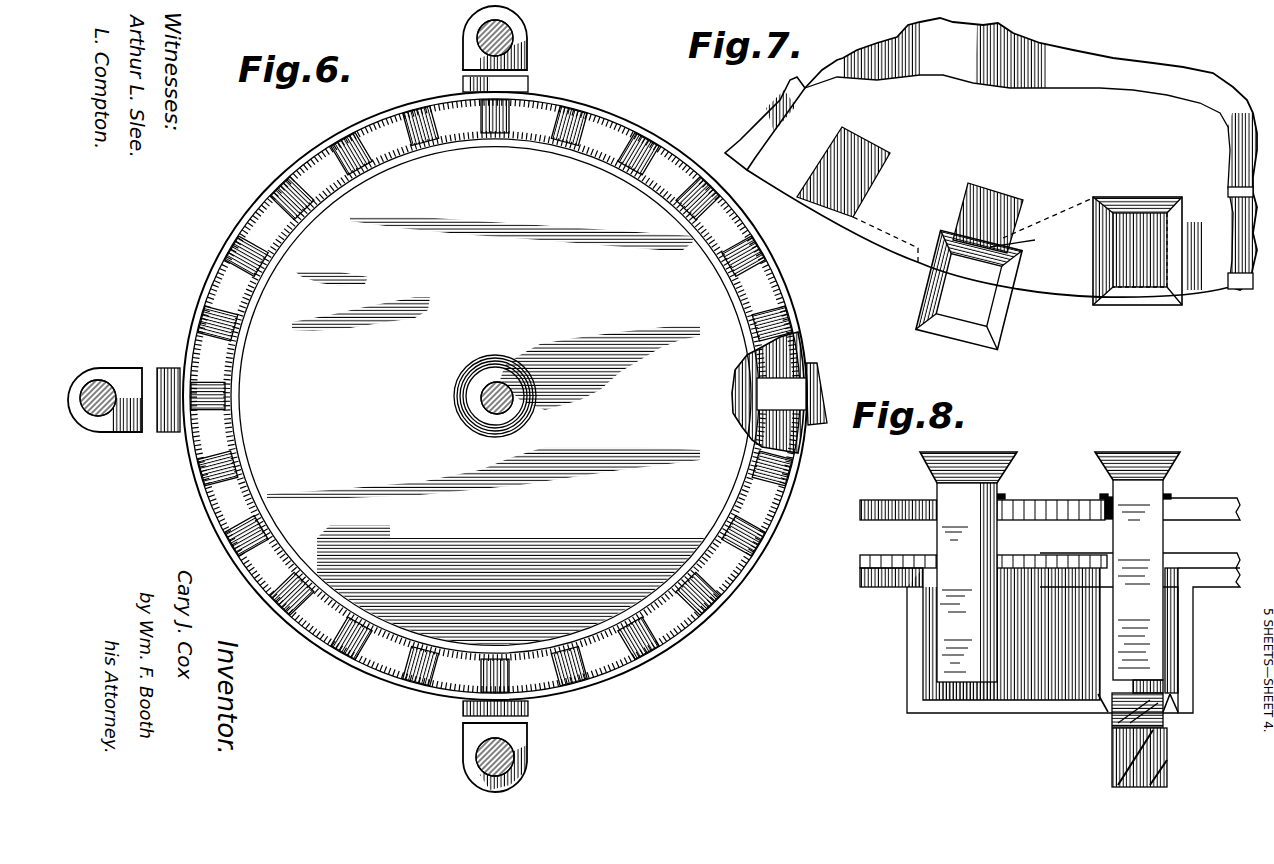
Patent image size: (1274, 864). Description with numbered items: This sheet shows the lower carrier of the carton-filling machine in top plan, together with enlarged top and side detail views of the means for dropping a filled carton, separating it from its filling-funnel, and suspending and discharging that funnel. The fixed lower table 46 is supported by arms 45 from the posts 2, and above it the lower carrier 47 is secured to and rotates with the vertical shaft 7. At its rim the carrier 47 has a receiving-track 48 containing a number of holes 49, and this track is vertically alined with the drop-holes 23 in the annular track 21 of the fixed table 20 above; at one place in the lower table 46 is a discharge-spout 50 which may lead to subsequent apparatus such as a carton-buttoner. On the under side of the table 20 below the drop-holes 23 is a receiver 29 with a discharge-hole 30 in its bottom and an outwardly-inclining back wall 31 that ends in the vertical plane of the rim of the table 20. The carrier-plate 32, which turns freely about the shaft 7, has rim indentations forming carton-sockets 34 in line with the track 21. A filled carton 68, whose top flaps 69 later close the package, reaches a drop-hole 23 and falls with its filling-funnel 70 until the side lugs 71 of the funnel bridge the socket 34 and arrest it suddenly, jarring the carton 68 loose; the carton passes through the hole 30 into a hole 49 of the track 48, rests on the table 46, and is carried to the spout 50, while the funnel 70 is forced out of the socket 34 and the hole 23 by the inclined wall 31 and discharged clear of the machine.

In FIG. 6, the posts 2 is at (522, 38).
In FIG. 6, the vertical shaft 7 is at (493, 384).
In FIG. 7, the fixed table 20 is at (1002, 157).
In FIG. 8, the fixed table 20 is at (1037, 560).
In FIG. 7, the annular track 21 is at (742, 130).
In FIG. 7, the drop-holes 23 is at (1157, 287).
In FIG. 8, the drop-holes 23 is at (1165, 568).
In FIG. 8, the receiver 29 is at (1180, 628).
In FIG. 8, the discharge-hole 30 is at (1185, 714).
In FIG. 7, the inclined back wall 31 is at (1050, 212).
In FIG. 8, the inclined back wall 31 is at (1040, 674).
In FIG. 7, the carrier-plate 32 is at (946, 192).
In FIG. 8, the carrier-plate 32 is at (1219, 508).
In FIG. 7, the carton-sockets 34 is at (964, 195).
In FIG. 8, the carton-sockets 34 is at (1108, 517).
In FIG. 6, the arms 45 is at (532, 86).
In FIG. 6, the fixed lower table 46 is at (796, 438).
In FIG. 6, the lower carrier 47 is at (495, 399).
In FIG. 6, the receiving-track 48 is at (790, 268).
In FIG. 6, the holes 49 is at (416, 112).
In FIG. 6, the discharge-spout 50 is at (781, 394).
In FIG. 8, the cartons 68 is at (1120, 759).
In FIG. 8, the top flaps 69 is at (1123, 700).
In FIG. 7, the filling-funnels 70 is at (1138, 197).
In FIG. 8, the filling-funnels 70 is at (1095, 453).
In FIG. 8, the side lugs 71 is at (1103, 495).